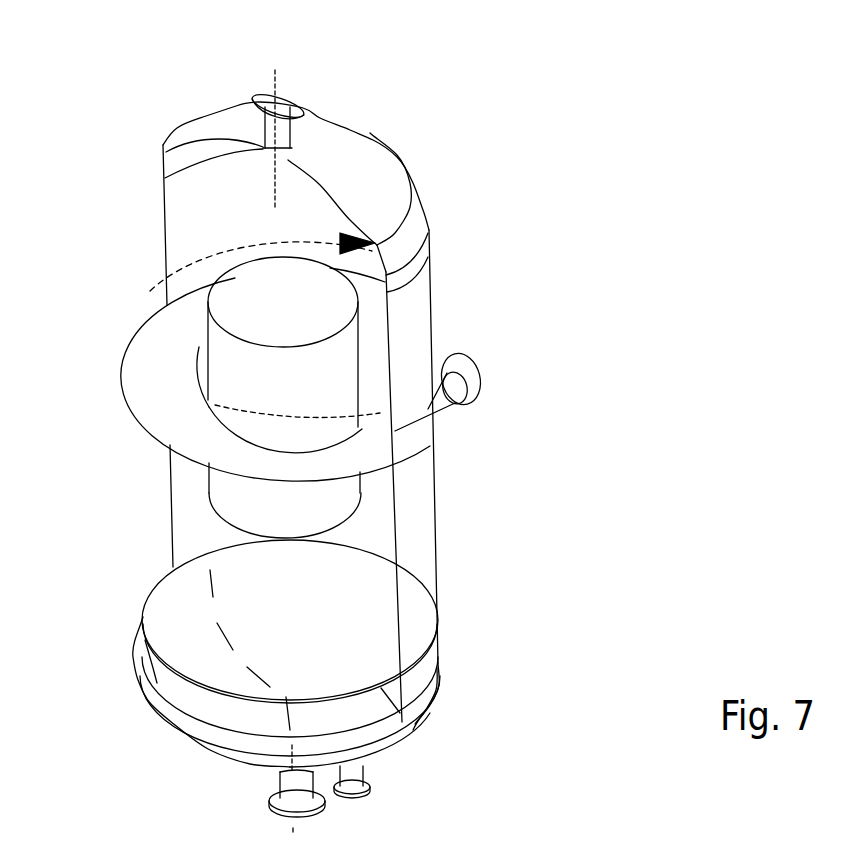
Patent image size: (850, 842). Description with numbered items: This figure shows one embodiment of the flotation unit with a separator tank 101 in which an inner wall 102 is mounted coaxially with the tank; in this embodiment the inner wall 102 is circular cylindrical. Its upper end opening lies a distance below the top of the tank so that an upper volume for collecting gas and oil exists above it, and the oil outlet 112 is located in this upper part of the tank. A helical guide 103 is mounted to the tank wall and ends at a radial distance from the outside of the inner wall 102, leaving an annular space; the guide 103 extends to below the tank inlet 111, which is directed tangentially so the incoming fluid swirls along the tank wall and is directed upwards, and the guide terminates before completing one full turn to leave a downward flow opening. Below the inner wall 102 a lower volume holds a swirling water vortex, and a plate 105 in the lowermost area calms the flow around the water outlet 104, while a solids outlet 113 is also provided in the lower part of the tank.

The outer housing cylinder 101 is at (162, 197).
The inner wall 102 is at (182, 322).
The helical guide 103 is at (147, 427).
The water outlet 104 is at (267, 793).
The plate 105 is at (420, 727).
The tank inlet 111 is at (477, 397).
The oil outlet 112 is at (303, 102).
The solids outlet 113 is at (373, 787).